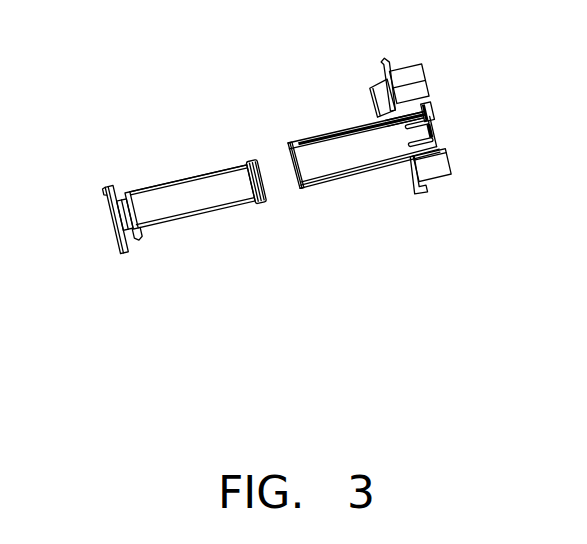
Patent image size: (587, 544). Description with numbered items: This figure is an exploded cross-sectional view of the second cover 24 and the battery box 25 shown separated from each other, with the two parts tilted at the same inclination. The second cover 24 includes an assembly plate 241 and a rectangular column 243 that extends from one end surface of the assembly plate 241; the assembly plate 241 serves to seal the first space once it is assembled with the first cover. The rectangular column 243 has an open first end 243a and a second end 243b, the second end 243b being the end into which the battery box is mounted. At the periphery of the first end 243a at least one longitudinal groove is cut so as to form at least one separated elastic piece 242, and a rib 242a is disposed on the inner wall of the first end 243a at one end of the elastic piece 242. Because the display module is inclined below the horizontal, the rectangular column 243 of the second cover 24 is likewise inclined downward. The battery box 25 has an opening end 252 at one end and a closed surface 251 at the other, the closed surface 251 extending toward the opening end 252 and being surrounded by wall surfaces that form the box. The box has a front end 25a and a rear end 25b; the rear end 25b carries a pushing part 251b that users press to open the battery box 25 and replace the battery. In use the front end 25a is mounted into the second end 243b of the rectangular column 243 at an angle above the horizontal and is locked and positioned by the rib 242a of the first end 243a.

The second cover 24 is at (384, 144).
The assembly plate 241 is at (383, 78).
The elastic piece 242 is at (418, 116).
The rib 242a is at (434, 134).
The rectangular column 243 is at (362, 176).
The first end 243a is at (472, 110).
The second end 243b is at (289, 167).
The battery box 25 is at (179, 207).
The closed surface 251 is at (191, 222).
The pushing part 251b is at (118, 242).
The opening end 252 is at (178, 176).
The front end 25a is at (259, 180).
The rear end 25b is at (127, 245).